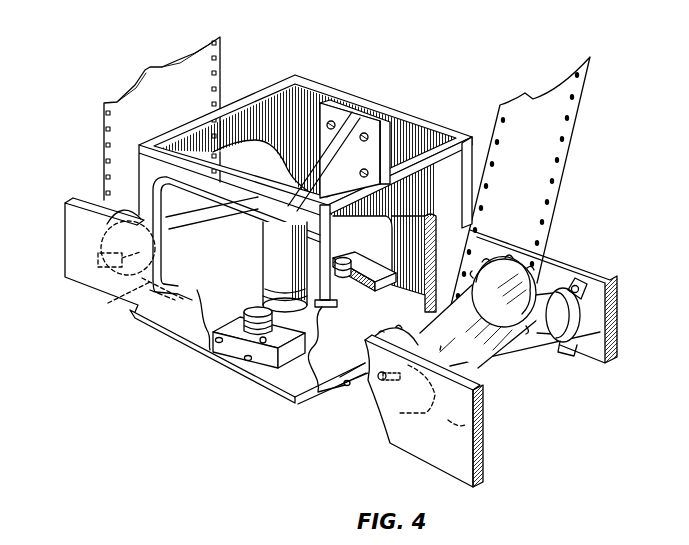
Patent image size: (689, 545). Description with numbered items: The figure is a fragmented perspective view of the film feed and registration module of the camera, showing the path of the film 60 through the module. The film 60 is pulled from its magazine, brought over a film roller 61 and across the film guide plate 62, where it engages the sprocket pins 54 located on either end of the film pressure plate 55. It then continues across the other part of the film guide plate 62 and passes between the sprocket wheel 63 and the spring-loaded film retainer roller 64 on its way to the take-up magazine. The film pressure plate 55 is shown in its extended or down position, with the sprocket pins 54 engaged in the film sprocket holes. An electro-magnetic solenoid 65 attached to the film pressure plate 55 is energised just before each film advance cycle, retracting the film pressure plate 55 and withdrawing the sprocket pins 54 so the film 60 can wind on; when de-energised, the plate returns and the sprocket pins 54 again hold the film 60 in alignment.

The sprocket pins 54 is at (245, 333).
The film pressure plate 55 is at (363, 285).
The film 60 is at (197, 70).
The film roller 61 is at (127, 278).
The film guide plate 62 is at (168, 332).
The sprocket wheel 63 is at (368, 373).
The spring-loaded film retainer roller 64 is at (523, 350).
The electro-magnetic solenoid 65 is at (266, 268).